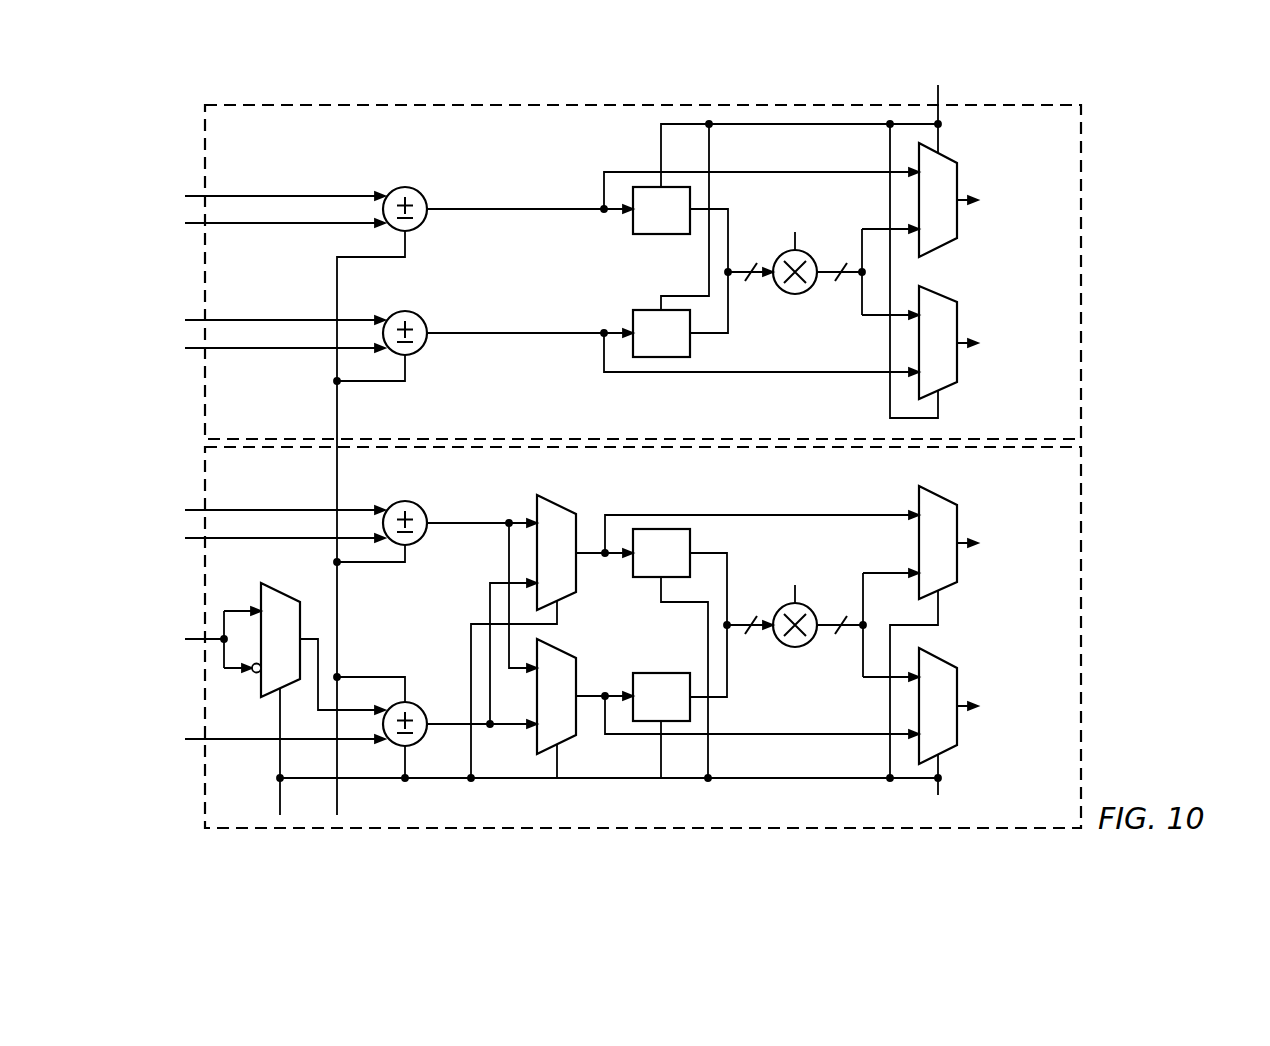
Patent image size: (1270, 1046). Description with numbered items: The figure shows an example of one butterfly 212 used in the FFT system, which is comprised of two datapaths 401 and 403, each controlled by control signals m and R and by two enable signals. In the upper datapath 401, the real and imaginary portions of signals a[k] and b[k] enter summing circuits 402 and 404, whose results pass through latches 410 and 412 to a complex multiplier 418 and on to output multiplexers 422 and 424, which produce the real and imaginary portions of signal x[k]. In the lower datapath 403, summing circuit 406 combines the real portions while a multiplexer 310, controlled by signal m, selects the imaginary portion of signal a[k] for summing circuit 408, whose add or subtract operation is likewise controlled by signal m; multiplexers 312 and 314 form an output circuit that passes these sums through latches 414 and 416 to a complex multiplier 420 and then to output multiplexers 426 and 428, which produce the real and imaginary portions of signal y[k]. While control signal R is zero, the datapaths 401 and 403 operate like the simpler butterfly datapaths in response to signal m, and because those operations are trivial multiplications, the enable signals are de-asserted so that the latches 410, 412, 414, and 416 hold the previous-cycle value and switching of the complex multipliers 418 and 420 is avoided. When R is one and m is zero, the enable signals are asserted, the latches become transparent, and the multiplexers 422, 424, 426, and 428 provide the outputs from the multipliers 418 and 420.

The butterfly 212 is at (1130, 274).
The datapath 401 is at (200, 160).
The datapath 403 is at (200, 490).
The summing circuit 402 is at (421, 192).
The summing circuit 404 is at (421, 316).
The summing circuit 406 is at (421, 506).
The summing circuit 408 is at (421, 708).
The latch 410 is at (661, 210).
The latch 412 is at (661, 333).
The latch 414 is at (661, 553).
The latch 416 is at (661, 697).
The complex multiplier 418 is at (810, 289).
The complex multiplier 420 is at (810, 642).
The multiplexer 422 is at (947, 156).
The multiplexer 424 is at (947, 299).
The multiplexer 426 is at (947, 499).
The multiplexer 428 is at (947, 661).
The multiplexer 310 is at (285, 592).
The multiplexer 312 is at (562, 505).
The multiplexer 314 is at (564, 650).